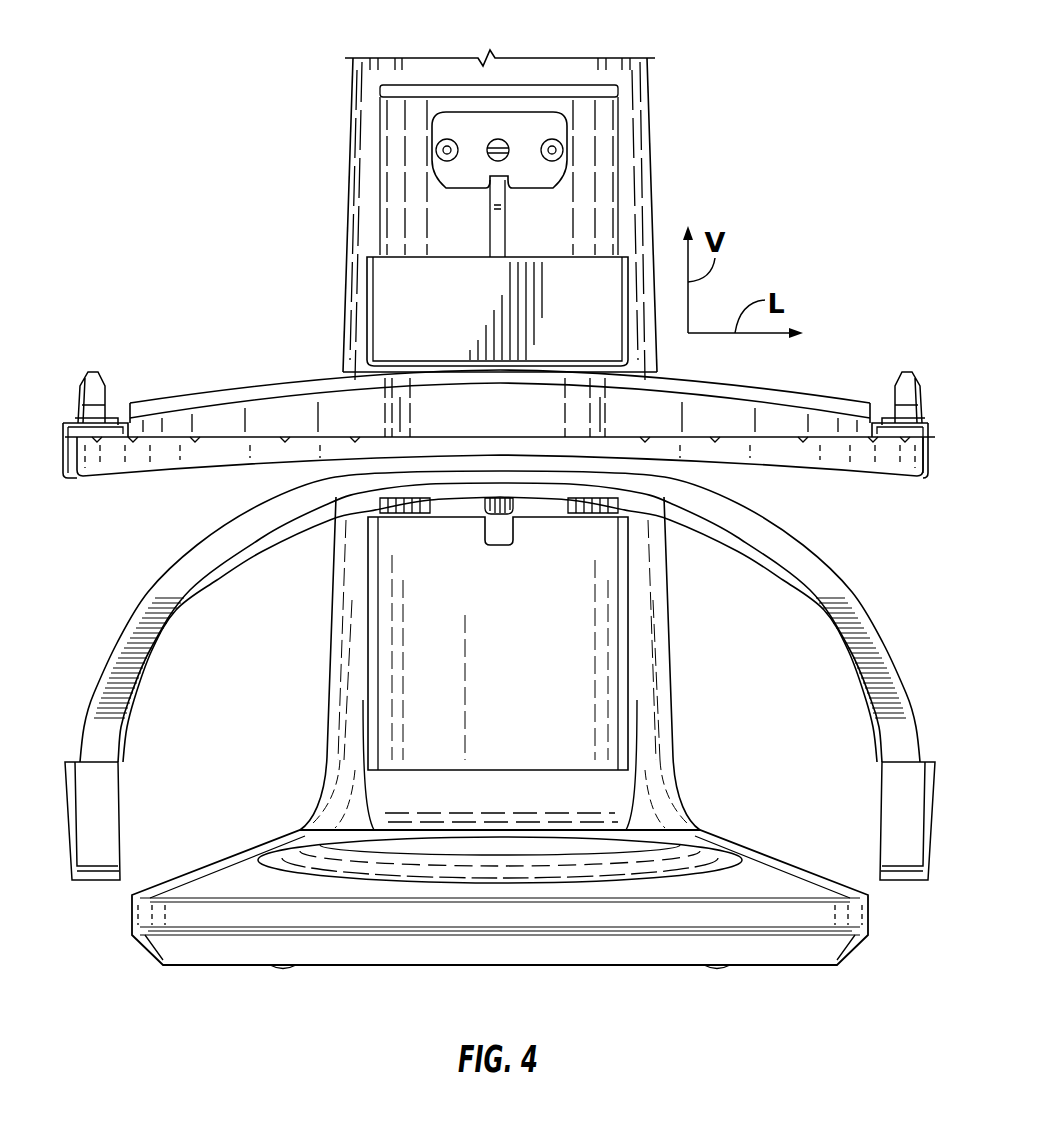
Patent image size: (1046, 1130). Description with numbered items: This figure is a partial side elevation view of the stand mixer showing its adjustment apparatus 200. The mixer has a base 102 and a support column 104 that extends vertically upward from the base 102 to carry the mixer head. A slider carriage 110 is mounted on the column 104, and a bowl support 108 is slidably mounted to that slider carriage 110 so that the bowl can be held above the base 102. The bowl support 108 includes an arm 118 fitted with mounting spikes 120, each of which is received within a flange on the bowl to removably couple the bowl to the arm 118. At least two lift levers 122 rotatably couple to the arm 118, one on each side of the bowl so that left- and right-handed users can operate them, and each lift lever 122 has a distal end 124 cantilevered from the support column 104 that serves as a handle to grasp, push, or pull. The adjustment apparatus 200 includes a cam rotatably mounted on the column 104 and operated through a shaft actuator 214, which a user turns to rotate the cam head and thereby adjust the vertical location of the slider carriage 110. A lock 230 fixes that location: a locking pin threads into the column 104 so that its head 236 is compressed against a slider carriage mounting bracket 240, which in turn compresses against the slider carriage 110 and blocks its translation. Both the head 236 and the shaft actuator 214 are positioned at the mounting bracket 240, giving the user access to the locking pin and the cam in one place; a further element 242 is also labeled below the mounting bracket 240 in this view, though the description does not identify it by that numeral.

The base 102 is at (135, 918).
The support column 104 is at (356, 662).
The bowl support 108 is at (356, 351).
The slider carriage 110 is at (388, 172).
The arm 118 is at (121, 455).
The mounting spike 120 is at (96, 388).
The lift lever 122 is at (112, 660).
The distal end 124 is at (112, 790).
The adjustment apparatus 200 is at (470, 202).
The shaft actuator 214 is at (502, 138).
The lock 230 is at (582, 144).
The head of locking pin 236 is at (438, 147).
The slider carriage mounting bracket 240 is at (531, 170).
The rail / tab 242 is at (497, 237).